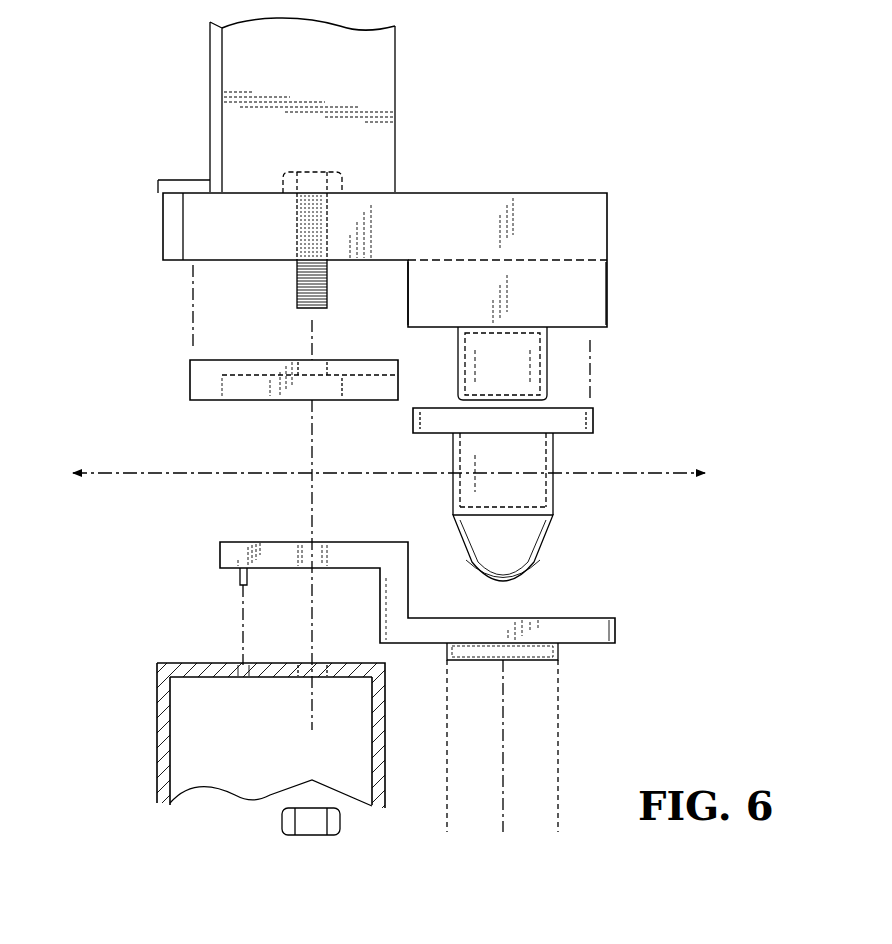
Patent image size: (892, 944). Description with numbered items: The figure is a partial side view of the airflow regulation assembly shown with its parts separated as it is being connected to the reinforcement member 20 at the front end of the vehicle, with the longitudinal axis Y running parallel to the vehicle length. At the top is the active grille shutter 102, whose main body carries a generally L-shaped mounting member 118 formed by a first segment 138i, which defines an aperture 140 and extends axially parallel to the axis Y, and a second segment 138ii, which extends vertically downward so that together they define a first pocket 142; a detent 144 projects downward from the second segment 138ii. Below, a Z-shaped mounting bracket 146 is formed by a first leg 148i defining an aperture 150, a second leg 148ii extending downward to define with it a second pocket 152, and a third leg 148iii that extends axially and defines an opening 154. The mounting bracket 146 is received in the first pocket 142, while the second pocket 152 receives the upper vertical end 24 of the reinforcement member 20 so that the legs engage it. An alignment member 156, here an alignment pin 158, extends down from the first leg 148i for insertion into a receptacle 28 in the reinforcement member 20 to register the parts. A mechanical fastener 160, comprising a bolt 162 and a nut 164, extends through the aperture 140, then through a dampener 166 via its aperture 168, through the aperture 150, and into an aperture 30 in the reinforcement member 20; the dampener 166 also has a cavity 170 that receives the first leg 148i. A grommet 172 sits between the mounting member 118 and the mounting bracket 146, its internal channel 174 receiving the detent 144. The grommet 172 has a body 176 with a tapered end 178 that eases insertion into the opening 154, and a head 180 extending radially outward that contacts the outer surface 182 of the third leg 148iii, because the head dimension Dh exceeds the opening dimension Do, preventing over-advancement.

The reinforcement member 20 is at (140, 790).
The upper vertical end 24 is at (247, 701).
The receptacle 28 is at (232, 673).
The aperture 30 is at (318, 676).
The active grille shutter 102 is at (434, 70).
The mounting member 118 is at (398, 261).
The first segment 138i is at (577, 208).
The second segment 138ii is at (593, 296).
The aperture 140 is at (312, 248).
The first pocket 142 is at (372, 280).
The detent 144 is at (549, 352).
The mounting bracket 146 is at (437, 654).
The first leg 148i is at (368, 543).
The second leg 148ii is at (406, 603).
The third leg 148iii is at (591, 648).
The aperture 150 is at (308, 557).
The second pocket 152 is at (352, 616).
The opening 154 is at (516, 666).
The alignment member 156 is at (256, 590).
The alignment pin 158 is at (239, 578).
The mechanical fastener 160 is at (255, 279).
The bolt 162 is at (297, 290).
The nut 164 is at (312, 838).
The dampener 166 is at (170, 360).
The aperture 168 is at (318, 362).
The cavity 170 is at (340, 380).
The grommet 172 is at (567, 555).
The internal channel 174 is at (556, 483).
The body 176 is at (572, 476).
The tapered end 178 is at (512, 553).
The head 180 is at (595, 420).
The outer surface 182 is at (602, 617).
The outer transverse cross-sectional dimension Dh is at (422, 420).
The inner transverse cross-sectional dimension Do is at (556, 820).
The longitudinal axis Y is at (137, 470).